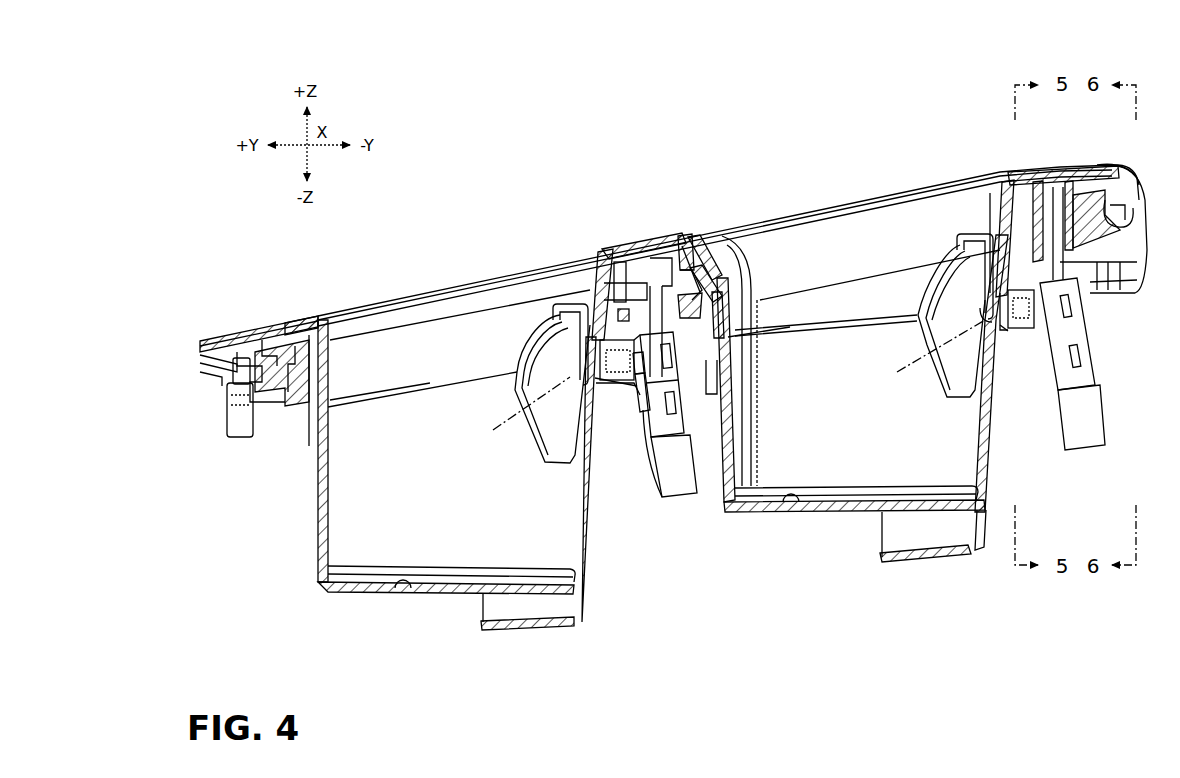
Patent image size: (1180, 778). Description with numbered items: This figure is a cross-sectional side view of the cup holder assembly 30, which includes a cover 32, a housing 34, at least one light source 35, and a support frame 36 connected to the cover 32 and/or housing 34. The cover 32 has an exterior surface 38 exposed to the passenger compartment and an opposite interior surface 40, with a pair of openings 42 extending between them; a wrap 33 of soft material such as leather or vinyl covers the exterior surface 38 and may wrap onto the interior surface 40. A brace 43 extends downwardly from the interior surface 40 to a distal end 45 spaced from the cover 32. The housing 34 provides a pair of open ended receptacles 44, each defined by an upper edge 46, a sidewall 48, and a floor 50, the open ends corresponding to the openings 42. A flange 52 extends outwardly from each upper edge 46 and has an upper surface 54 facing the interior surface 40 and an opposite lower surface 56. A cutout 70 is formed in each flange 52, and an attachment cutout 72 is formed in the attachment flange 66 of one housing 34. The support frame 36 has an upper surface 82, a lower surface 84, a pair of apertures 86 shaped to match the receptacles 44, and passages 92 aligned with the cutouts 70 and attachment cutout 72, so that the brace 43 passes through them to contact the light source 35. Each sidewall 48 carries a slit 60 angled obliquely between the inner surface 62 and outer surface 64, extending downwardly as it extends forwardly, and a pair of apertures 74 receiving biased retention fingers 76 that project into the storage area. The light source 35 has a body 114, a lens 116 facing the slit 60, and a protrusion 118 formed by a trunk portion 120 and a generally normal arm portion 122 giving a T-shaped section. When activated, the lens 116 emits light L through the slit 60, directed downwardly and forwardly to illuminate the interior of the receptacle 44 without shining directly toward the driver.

The cup holder assembly 30 is at (657, 240).
The cover 32 is at (268, 335).
The wrap 33 is at (217, 343).
The housing 34 is at (615, 454).
The light source 35 is at (851, 408).
The support frame 36 is at (1088, 228).
The exterior surface 38 is at (652, 255).
The interior surface 40 is at (672, 245).
The openings 42 is at (322, 322).
The brace 43 is at (627, 282).
The open ended receptacles 44 is at (370, 345).
The distal end 45 is at (665, 330).
The upper edge 46 is at (413, 310).
The sidewall 48 is at (318, 515).
The floor 50 is at (400, 590).
The flange 52 is at (250, 395).
The upper surface 54 is at (592, 282).
The lower surface 56 is at (600, 320).
The slit 60 is at (595, 383).
The inner surface 62 is at (422, 472).
The outer surface 64 is at (317, 484).
The attachment flange 66 is at (700, 252).
The cutout 70 is at (648, 300).
The attachment cutout 72 is at (693, 232).
The apertures 74 is at (560, 322).
The retention fingers 76 is at (522, 357).
The upper surface 82 is at (1095, 195).
The lower surface 84 is at (1122, 225).
The apertures 86 is at (310, 412).
The passages 92 is at (690, 317).
The body 114 is at (657, 440).
The lens 116 is at (618, 385).
The protrusion 118 is at (637, 410).
The trunk portion 120 is at (600, 393).
The arm portion 122 is at (645, 430).
The light L is at (512, 418).